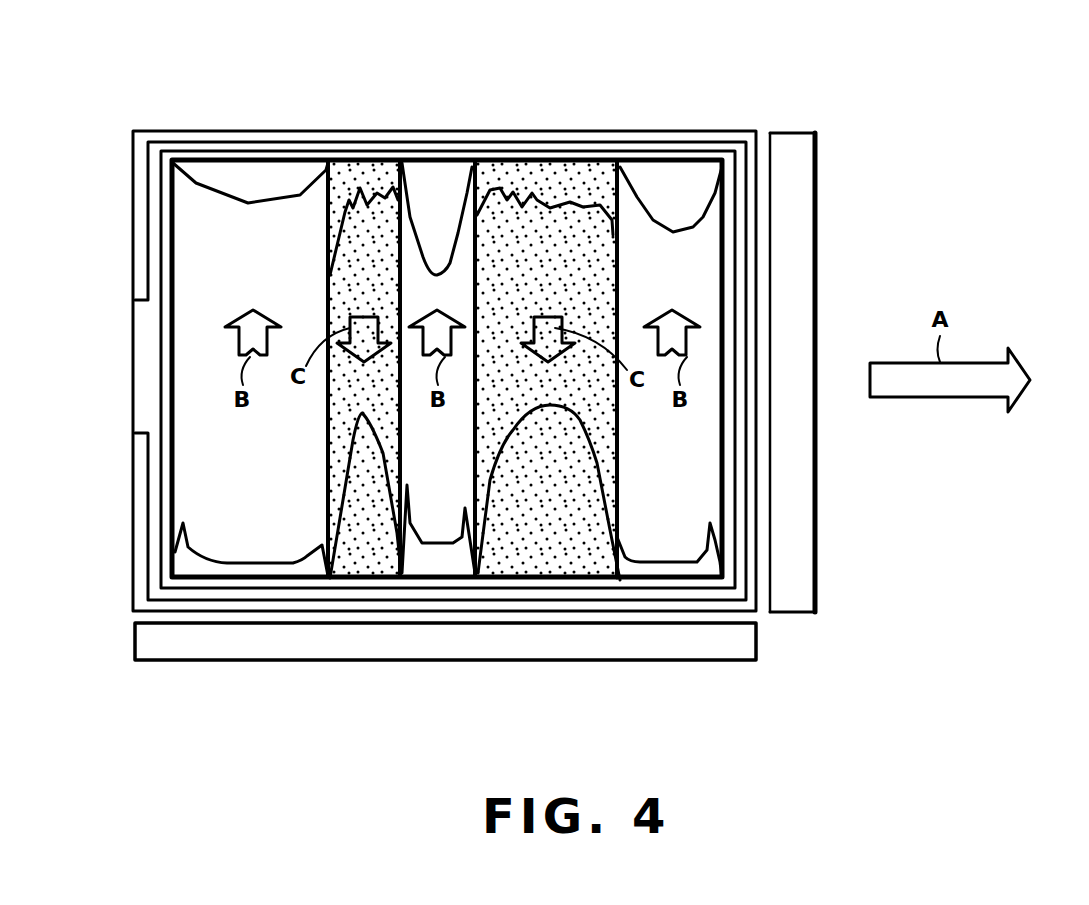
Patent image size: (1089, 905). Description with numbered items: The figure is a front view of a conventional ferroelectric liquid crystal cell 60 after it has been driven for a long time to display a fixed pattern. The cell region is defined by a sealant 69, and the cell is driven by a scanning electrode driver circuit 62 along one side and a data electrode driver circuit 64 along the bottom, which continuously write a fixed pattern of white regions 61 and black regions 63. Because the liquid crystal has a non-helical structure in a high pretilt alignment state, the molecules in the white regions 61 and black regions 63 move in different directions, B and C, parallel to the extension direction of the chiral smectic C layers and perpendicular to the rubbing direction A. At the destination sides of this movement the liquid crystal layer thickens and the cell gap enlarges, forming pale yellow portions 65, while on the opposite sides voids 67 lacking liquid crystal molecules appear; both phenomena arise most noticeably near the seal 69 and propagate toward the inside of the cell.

The ferroelectric liquid crystal cell 60 is at (406, 124).
The white display region 61 is at (238, 284).
The scanning electrode driver circuit 62 is at (800, 255).
The black display region 63 is at (348, 284).
The data electrode driver circuit 64 is at (740, 650).
The yellowing portions 65 is at (282, 182).
The voids 67 is at (358, 172).
The sealant 69 is at (240, 158).